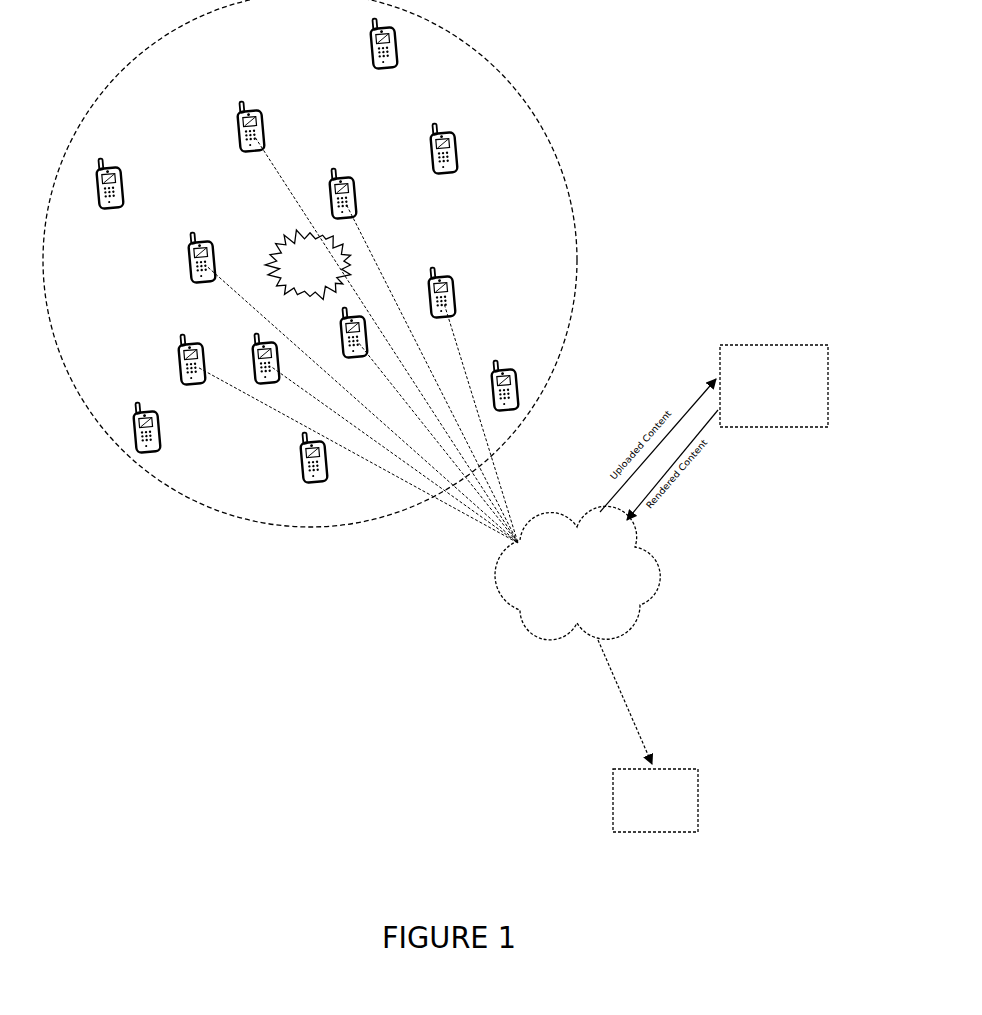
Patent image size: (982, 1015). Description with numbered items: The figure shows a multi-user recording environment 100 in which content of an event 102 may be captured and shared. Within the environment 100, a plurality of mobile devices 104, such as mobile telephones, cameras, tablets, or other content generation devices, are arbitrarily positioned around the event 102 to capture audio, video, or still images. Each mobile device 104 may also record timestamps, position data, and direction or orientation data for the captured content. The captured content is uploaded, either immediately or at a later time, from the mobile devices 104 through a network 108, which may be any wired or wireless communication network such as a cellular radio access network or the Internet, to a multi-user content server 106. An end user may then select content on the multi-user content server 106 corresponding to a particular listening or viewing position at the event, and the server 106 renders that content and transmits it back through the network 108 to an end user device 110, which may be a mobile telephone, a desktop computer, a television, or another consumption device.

The environment 100 is at (493, 32).
The event 102 is at (297, 236).
The mobile device 104 is at (258, 113).
The multi-user content server 106 is at (775, 345).
The network 108 is at (660, 573).
The end user device 110 is at (698, 800).